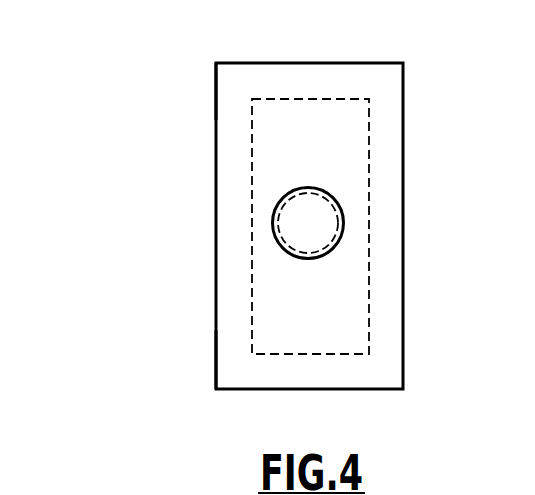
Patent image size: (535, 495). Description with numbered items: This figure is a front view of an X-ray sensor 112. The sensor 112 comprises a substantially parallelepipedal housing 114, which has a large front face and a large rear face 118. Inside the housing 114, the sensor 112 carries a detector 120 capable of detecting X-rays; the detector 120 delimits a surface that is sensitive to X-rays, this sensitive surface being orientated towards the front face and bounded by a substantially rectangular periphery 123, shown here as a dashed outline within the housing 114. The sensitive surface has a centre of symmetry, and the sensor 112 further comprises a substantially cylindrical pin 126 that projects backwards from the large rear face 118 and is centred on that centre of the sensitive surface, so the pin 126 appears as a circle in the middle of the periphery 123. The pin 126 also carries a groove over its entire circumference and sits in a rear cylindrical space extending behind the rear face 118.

The sensor 112 is at (178, 272).
The housing 114 is at (235, 80).
The large rear face 118 is at (232, 359).
The detector 120 is at (327, 132).
The periphery 123 is at (367, 307).
The pin 126 is at (326, 226).